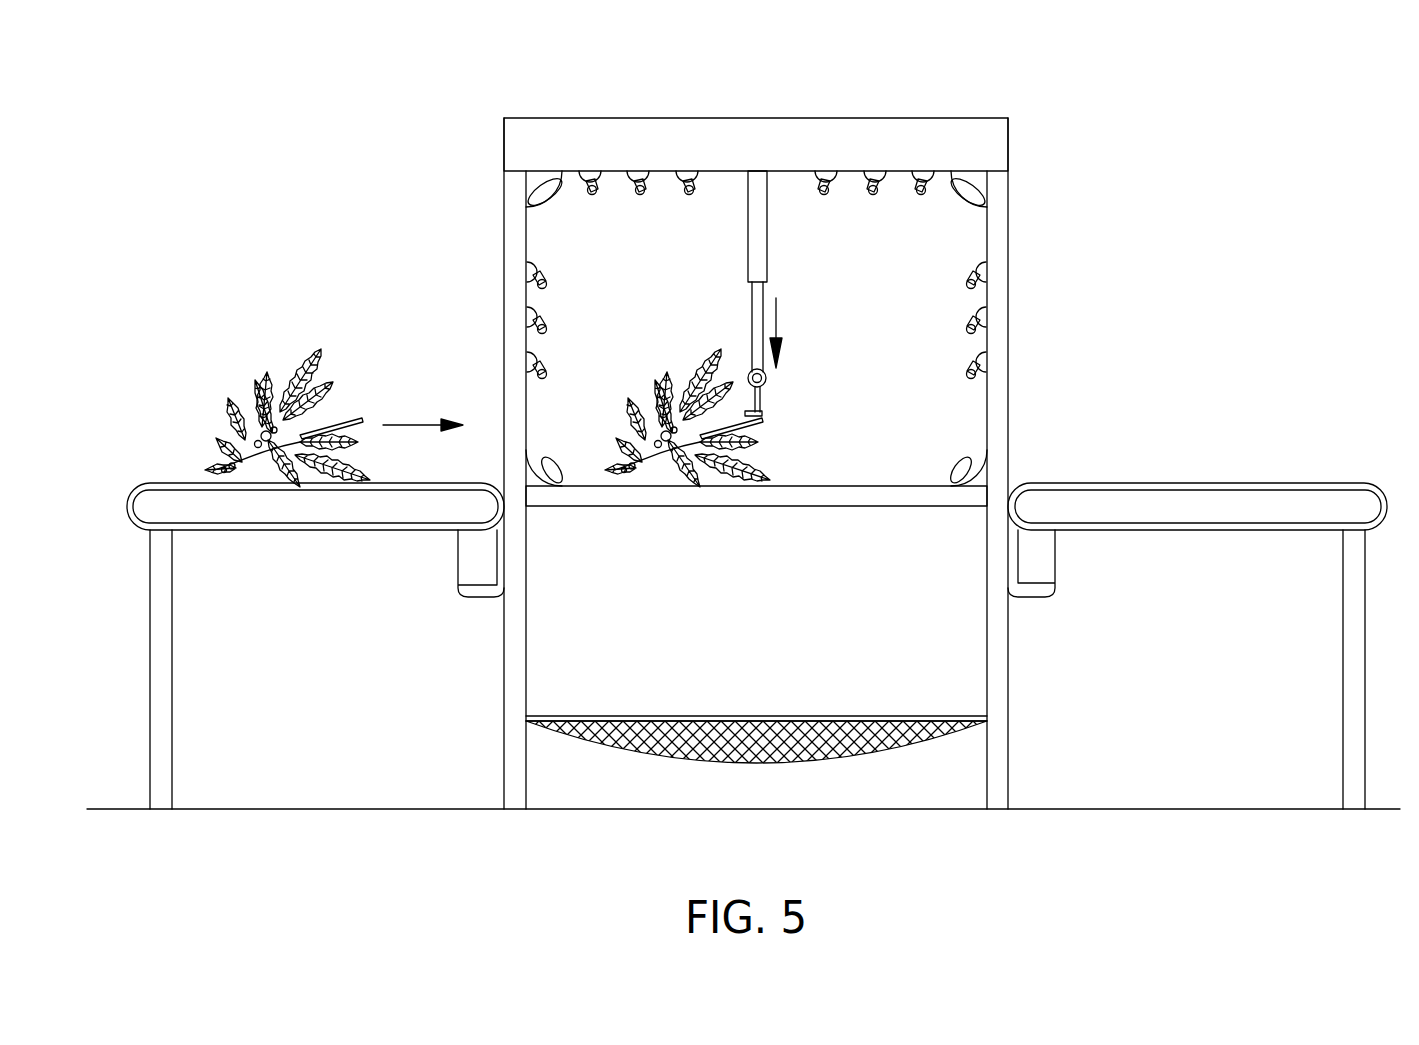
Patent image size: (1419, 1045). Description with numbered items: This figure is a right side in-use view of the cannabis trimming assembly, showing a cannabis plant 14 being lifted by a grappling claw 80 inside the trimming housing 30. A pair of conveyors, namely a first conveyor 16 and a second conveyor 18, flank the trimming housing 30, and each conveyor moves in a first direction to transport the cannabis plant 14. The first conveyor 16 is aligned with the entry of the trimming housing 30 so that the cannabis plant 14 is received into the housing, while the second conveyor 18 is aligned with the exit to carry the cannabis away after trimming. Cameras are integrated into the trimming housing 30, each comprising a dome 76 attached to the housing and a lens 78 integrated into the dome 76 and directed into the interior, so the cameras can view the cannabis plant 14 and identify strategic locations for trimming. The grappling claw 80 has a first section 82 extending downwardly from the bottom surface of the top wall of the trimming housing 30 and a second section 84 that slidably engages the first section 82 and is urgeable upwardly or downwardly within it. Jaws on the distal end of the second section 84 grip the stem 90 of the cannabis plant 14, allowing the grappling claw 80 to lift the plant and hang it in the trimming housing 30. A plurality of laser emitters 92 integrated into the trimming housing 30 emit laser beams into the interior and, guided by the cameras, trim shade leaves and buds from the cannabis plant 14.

The cannabis plant 14 is at (282, 340).
The first conveyor 16 is at (163, 465).
The second conveyor 18 is at (1320, 470).
The trimming housing 30 is at (759, 427).
The dome 76 is at (548, 172).
The lens 78 is at (548, 192).
The grappling claw 80 is at (775, 240).
The first section 82 is at (748, 223).
The second section 84 is at (763, 296).
The stem 90 is at (745, 422).
The laser emitters 92 is at (537, 362).